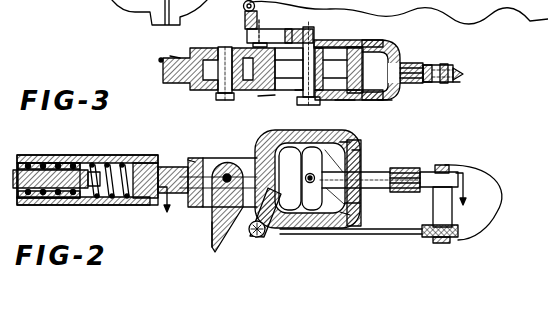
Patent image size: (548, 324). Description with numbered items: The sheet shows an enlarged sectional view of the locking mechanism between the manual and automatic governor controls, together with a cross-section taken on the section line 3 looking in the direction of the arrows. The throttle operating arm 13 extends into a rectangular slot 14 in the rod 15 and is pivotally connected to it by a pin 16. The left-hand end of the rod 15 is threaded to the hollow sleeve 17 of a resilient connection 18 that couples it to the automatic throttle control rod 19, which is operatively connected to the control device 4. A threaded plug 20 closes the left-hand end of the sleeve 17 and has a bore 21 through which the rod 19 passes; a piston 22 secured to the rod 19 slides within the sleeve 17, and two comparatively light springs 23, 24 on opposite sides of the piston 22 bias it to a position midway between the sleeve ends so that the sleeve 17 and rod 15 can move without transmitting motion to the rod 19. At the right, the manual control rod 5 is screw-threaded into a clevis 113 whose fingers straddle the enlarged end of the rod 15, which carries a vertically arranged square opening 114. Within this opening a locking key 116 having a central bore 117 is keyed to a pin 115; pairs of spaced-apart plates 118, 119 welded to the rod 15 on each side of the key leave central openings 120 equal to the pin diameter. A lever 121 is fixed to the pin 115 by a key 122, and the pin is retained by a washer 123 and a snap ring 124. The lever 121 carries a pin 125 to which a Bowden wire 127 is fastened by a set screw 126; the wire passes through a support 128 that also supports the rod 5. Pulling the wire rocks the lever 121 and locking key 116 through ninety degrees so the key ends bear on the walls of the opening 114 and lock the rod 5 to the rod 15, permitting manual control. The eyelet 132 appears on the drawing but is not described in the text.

In FIG. 2, the section line 3 is at (313, 203).
In FIG. 3, the control device 4 is at (112, 3).
In FIG. 3, the manual control rod 5 is at (432, 65).
In FIG. 2, the manual control rod 5 is at (440, 168).
In FIG. 3, the operating arm 13 is at (159, 60).
In FIG. 2, the operating arm 13 is at (214, 232).
In FIG. 3, the rectangular slot 14 is at (213, 140).
In FIG. 3, the rod 15 is at (170, 56).
In FIG. 2, the rod 15 is at (192, 162).
In FIG. 3, the pin 16 is at (207, 56).
In FIG. 2, the pin 16 is at (226, 163).
In FIG. 2, the hollow sleeve 17 is at (150, 164).
In FIG. 2, the resilient connection 18 is at (123, 156).
In FIG. 2, the automatic throttle control rod 19 is at (17, 163).
In FIG. 2, the threaded plug 20 is at (40, 163).
In FIG. 2, the bore 21 is at (13, 195).
In FIG. 2, the piston 22 is at (83, 200).
In FIG. 2, the spring 23 is at (78, 160).
In FIG. 2, the spring 24 is at (120, 194).
In FIG. 3, the clevis 113 is at (392, 47).
In FIG. 2, the clevis 113 is at (395, 169).
In FIG. 3, the square opening 114 is at (384, 104).
In FIG. 3, the pin 115 is at (300, 91).
In FIG. 3, the locking key 116 is at (353, 92).
In FIG. 2, the locking key 116 is at (306, 175).
In FIG. 3, the central bore 117 is at (273, 92).
In FIG. 2, the plate 118 is at (360, 150).
In FIG. 2, the plate 119 is at (338, 208).
In FIG. 3, the central opening 120 is at (323, 48).
In FIG. 2, the central opening 120 is at (355, 158).
In FIG. 3, the lever 121 is at (293, 29).
In FIG. 2, the lever 121 is at (284, 234).
In FIG. 3, the key 122 is at (312, 30).
In FIG. 2, the key 122 is at (356, 203).
In FIG. 3, the washer 123 is at (349, 100).
In FIG. 2, the snap ring 124 is at (348, 141).
In FIG. 3, the pin 125 is at (247, 33).
In FIG. 2, the pin 125 is at (250, 236).
In FIG. 2, the set screw 126 is at (263, 238).
In FIG. 3, the Bowden wire 127 is at (386, 62).
In FIG. 2, the Bowden wire 127 is at (424, 225).
In FIG. 3, the support 128 is at (449, 65).
In FIG. 2, the support 128 is at (477, 202).
In FIG. 3, the eyelet 132 is at (243, 8).